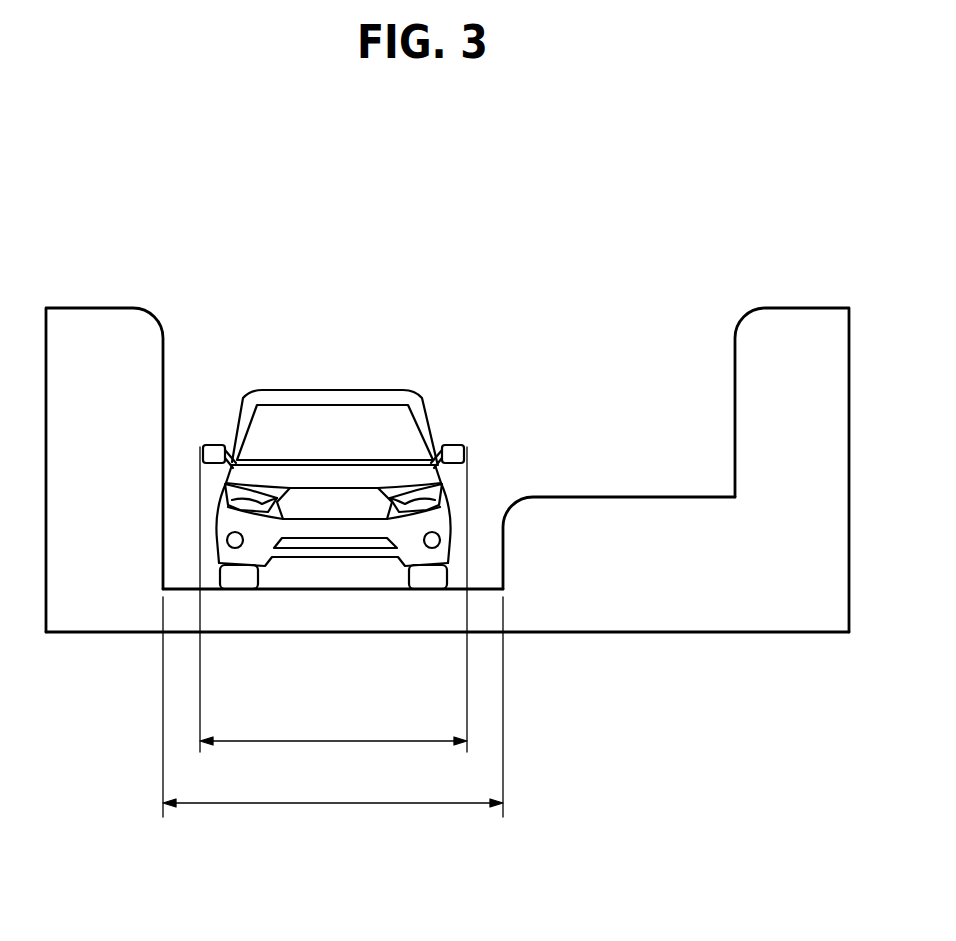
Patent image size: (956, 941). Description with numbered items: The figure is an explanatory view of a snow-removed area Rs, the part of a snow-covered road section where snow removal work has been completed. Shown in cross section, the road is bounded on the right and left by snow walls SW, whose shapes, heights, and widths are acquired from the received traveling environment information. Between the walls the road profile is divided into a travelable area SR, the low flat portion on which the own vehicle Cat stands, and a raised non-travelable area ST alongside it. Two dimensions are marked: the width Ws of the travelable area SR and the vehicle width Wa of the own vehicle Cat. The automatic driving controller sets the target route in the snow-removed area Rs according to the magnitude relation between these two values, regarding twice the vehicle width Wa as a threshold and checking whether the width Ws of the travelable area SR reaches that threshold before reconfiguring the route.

The snow wall SW is at (98, 307).
The travelable area SR is at (477, 553).
The non-travelable area ST is at (617, 495).
The snow-removed area Rs is at (557, 293).
The own vehicle Cat is at (372, 390).
The vehicle width Wa is at (333, 599).
The width of the travelable area Ws is at (333, 707).